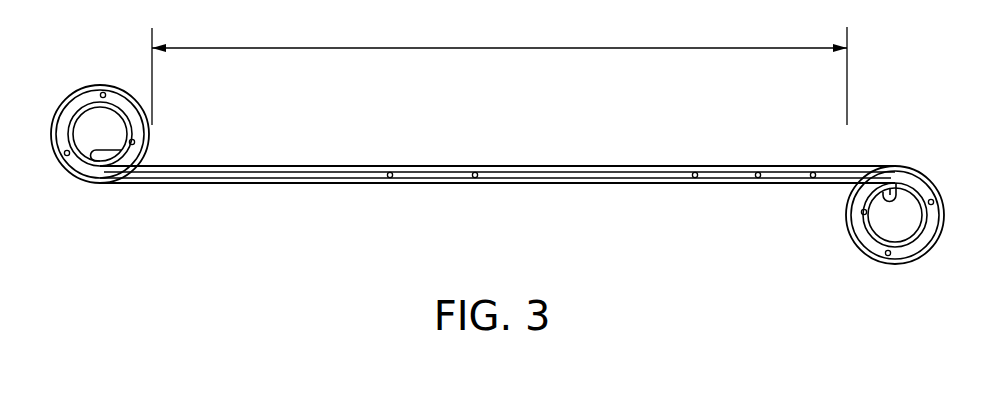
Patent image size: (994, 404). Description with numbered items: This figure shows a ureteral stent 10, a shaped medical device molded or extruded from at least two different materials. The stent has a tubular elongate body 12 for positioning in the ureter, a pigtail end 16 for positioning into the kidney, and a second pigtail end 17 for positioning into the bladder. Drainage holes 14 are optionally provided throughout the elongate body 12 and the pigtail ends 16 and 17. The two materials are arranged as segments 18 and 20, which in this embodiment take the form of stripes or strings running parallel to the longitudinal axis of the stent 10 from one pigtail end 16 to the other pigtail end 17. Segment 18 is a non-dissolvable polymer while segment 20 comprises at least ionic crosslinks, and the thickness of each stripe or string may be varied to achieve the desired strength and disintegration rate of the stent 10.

The ureteral stent 10 is at (497, 162).
The tubular elongate body 12 is at (499, 73).
The drainage holes 14 is at (136, 143).
The pigtail end 16 is at (853, 279).
The second pigtail end 17 is at (91, 70).
The segment 18 is at (603, 183).
The segment 20 is at (617, 173).